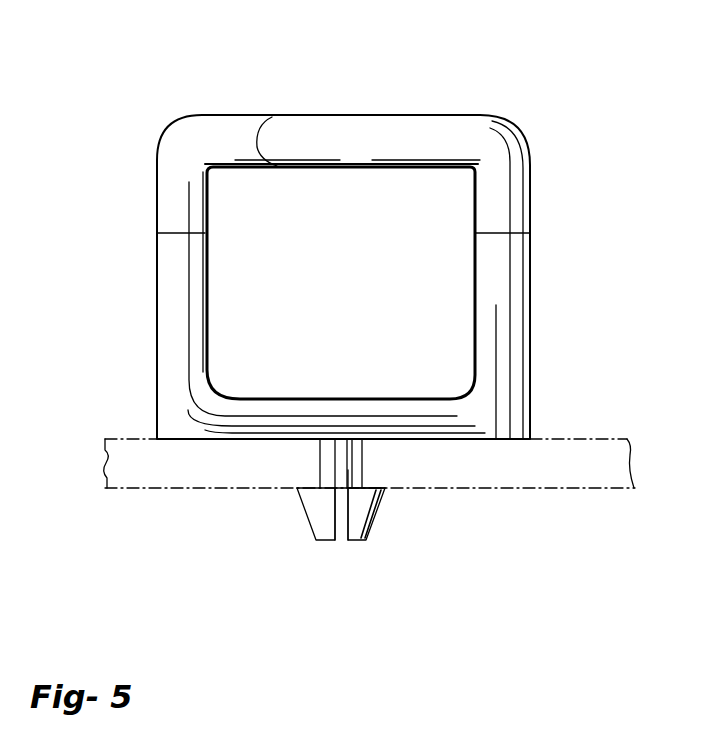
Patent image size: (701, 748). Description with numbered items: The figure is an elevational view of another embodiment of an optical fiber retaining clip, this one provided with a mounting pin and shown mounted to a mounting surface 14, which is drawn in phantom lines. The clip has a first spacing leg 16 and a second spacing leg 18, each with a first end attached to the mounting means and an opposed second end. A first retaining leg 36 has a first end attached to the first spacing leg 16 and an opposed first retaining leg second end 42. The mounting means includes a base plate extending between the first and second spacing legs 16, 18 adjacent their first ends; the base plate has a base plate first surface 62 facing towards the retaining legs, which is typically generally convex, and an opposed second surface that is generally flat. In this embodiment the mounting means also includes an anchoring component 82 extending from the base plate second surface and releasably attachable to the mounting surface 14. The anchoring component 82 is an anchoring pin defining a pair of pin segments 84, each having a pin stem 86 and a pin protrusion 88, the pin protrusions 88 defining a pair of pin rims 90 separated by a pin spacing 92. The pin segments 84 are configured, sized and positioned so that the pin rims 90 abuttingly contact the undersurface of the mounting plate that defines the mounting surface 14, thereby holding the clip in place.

The mounting surface 14 is at (596, 439).
The first spacing leg 16 is at (500, 268).
The second spacing leg 18 is at (170, 298).
The first retaining leg 36 is at (396, 128).
The first retaining leg second end 42 is at (257, 145).
The base plate first surface 62 is at (405, 398).
The anchoring component 82 is at (315, 584).
The pin segments 84 is at (361, 551).
The pin stems 86 is at (380, 463).
The pin protrusions 88 is at (312, 508).
The pin rims 90 is at (368, 490).
The pin spacing 92 is at (335, 472).